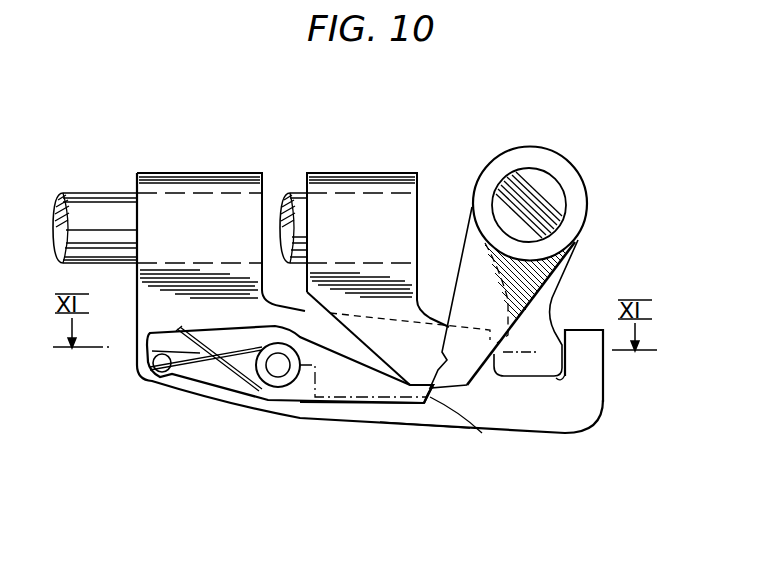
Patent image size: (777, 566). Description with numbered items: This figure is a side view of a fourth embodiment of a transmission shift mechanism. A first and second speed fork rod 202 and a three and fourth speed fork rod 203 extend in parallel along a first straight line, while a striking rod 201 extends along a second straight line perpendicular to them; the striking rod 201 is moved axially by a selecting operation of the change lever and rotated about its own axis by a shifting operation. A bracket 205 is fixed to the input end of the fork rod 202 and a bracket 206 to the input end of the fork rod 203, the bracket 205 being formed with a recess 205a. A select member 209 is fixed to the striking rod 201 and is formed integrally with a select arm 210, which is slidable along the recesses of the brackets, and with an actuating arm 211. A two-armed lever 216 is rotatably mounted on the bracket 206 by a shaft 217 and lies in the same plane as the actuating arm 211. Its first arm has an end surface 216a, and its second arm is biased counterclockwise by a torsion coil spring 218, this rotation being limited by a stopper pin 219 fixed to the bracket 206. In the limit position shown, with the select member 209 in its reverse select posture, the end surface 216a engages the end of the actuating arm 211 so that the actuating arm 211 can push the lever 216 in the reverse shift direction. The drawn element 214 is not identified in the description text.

The striking rod 201 is at (537, 190).
The first and second speed fork rod 202 is at (302, 202).
The three and fourth speed fork rod 203 is at (107, 200).
The bracket 205 is at (580, 417).
The recess 205a is at (560, 378).
The bracket 206 is at (420, 417).
The select member 209 is at (573, 202).
The select arm 210 is at (538, 322).
The actuating arm 211 is at (460, 283).
The plate 214 is at (326, 410).
The two-armed lever 216 is at (255, 388).
The end surface 216a is at (432, 393).
The shaft 217 is at (278, 370).
The torsion coil spring 218 is at (173, 378).
The stopper pin 219 is at (157, 370).